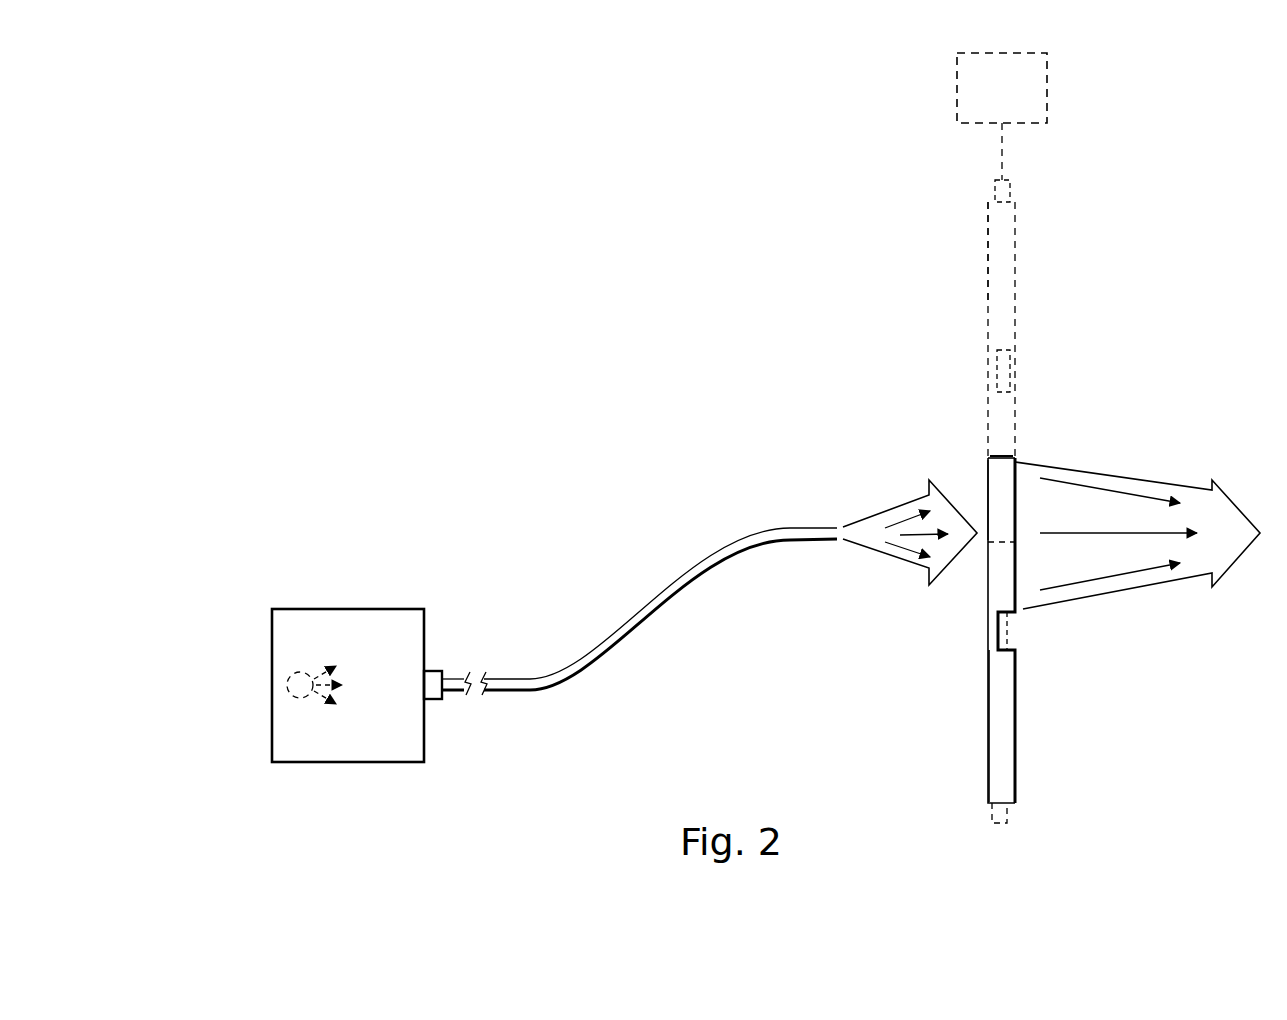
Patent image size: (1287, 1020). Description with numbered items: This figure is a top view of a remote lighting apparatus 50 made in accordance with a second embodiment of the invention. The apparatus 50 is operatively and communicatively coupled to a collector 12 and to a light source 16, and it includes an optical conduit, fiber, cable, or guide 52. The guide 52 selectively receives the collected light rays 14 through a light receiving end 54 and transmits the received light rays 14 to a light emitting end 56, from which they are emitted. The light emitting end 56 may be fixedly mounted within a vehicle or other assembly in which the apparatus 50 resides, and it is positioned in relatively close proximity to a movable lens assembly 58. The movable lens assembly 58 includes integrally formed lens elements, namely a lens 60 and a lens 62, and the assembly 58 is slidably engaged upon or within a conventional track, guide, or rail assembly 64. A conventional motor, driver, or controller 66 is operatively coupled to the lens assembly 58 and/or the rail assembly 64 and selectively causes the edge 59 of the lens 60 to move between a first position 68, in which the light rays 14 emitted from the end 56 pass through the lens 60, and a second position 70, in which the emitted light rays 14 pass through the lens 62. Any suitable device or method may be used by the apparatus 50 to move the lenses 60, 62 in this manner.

The collector 12 is at (390, 608).
The light rays 14 is at (331, 698).
The light source 16 is at (289, 676).
The remote lighting apparatus 50 is at (596, 418).
The optical guide 52 is at (623, 628).
The light receiving end 54 is at (446, 680).
The light emitting end 56 is at (845, 526).
The movable lens assembly 58 is at (1020, 470).
The edge 59 is at (1005, 457).
The lens 60 is at (1018, 501).
The lens 62 is at (1017, 735).
The rail assembly 64 is at (1010, 186).
The motor/driver/controller 66 is at (985, 102).
The first position 68 is at (985, 456).
The second position 70 is at (988, 200).